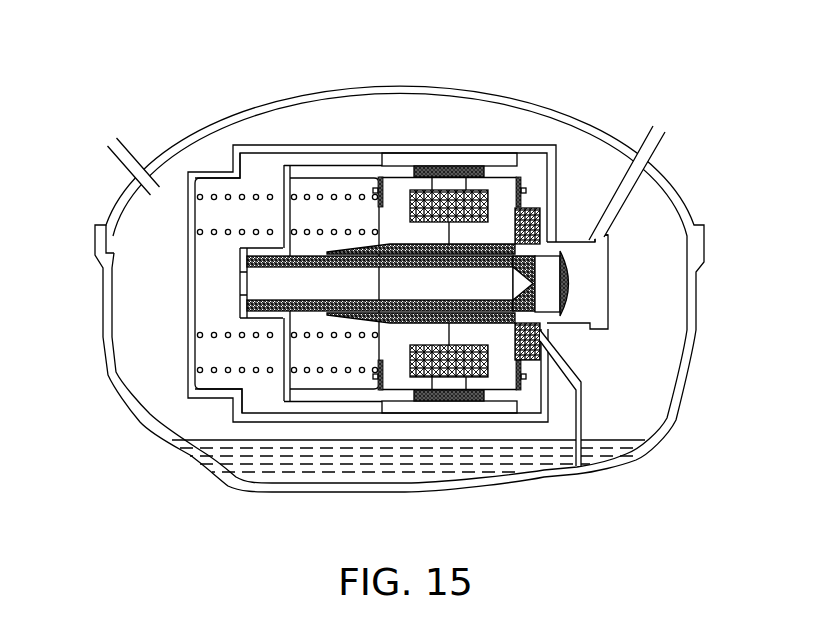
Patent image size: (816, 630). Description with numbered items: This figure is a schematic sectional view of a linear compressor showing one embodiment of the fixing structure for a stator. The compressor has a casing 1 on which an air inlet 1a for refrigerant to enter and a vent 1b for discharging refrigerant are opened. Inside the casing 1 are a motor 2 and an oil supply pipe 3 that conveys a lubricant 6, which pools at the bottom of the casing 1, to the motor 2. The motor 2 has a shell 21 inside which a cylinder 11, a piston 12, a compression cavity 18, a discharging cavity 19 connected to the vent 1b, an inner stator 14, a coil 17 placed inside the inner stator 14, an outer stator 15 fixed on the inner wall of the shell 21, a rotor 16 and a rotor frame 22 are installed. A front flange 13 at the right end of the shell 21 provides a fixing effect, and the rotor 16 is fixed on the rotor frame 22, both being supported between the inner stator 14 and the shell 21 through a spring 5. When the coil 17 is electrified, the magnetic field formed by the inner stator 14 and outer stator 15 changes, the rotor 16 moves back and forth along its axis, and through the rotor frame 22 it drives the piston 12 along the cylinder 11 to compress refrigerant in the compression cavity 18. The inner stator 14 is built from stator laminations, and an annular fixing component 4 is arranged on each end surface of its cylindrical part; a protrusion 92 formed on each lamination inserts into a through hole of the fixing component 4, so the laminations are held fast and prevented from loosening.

The casing 1 is at (415, 85).
The air inlet 1a is at (114, 139).
The vent 1b is at (657, 124).
The motor 2 is at (284, 142).
The oil supply pipe 3 is at (572, 380).
The fixing component 4 is at (381, 186).
The spring 5 is at (213, 340).
The lubricant 6 is at (304, 457).
The cylinder 11 is at (527, 332).
The piston 12 is at (535, 287).
The front flange 13 is at (609, 299).
The inner stator 14 is at (397, 368).
The outer stator 15 is at (417, 160).
The rotor 16 is at (459, 167).
The coil 17 is at (488, 190).
The compression cavity 18 is at (548, 283).
The discharging cavity 19 is at (588, 272).
The shell 21 is at (233, 165).
The rotor frame 22 is at (287, 392).
The protrusion 92 is at (374, 192).